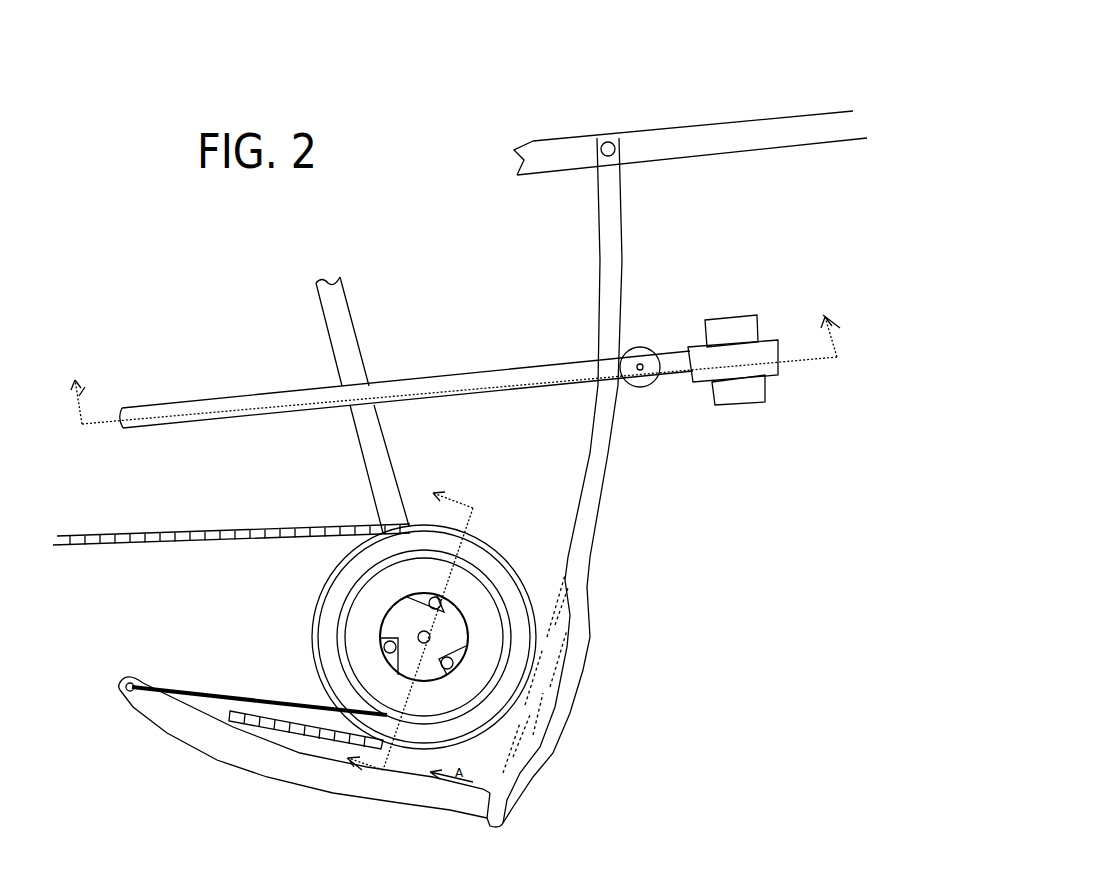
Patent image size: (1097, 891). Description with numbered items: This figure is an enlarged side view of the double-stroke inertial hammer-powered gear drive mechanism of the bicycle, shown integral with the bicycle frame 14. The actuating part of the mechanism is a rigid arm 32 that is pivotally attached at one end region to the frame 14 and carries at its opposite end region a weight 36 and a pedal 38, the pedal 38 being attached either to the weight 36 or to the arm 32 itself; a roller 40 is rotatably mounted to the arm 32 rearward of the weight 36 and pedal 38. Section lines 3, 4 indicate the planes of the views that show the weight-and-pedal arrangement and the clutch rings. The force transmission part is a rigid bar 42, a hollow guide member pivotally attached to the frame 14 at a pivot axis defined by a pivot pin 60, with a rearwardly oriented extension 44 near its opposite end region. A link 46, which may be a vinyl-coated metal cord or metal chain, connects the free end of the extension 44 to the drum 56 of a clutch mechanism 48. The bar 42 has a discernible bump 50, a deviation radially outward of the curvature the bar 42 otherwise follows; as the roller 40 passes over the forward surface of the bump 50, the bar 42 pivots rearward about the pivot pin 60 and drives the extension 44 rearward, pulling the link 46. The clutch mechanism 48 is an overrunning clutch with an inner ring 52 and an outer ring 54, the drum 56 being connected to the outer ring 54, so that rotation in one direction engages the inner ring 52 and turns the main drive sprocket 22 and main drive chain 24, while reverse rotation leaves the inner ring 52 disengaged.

The section line 3- 3 is at (451, 346).
The section line 4- 4 is at (398, 616).
The bicycle frame 14 is at (557, 153).
The main drive sprocket 22 is at (322, 673).
The main drive chain 24 is at (258, 525).
The rigid arm 32 is at (475, 377).
The weight 36 is at (733, 328).
The pedal 38 is at (705, 357).
The roller 40 is at (647, 390).
The rigid bar 42 is at (603, 547).
The rearwardly oriented extension 44 is at (260, 770).
The link 46 is at (210, 693).
The clutch mechanism 48 is at (287, 657).
The bump 50 is at (573, 692).
The inner ring 52 is at (443, 643).
The outer ring 54 is at (552, 470).
The drum 56 is at (343, 605).
The pivot pin 60 is at (617, 143).